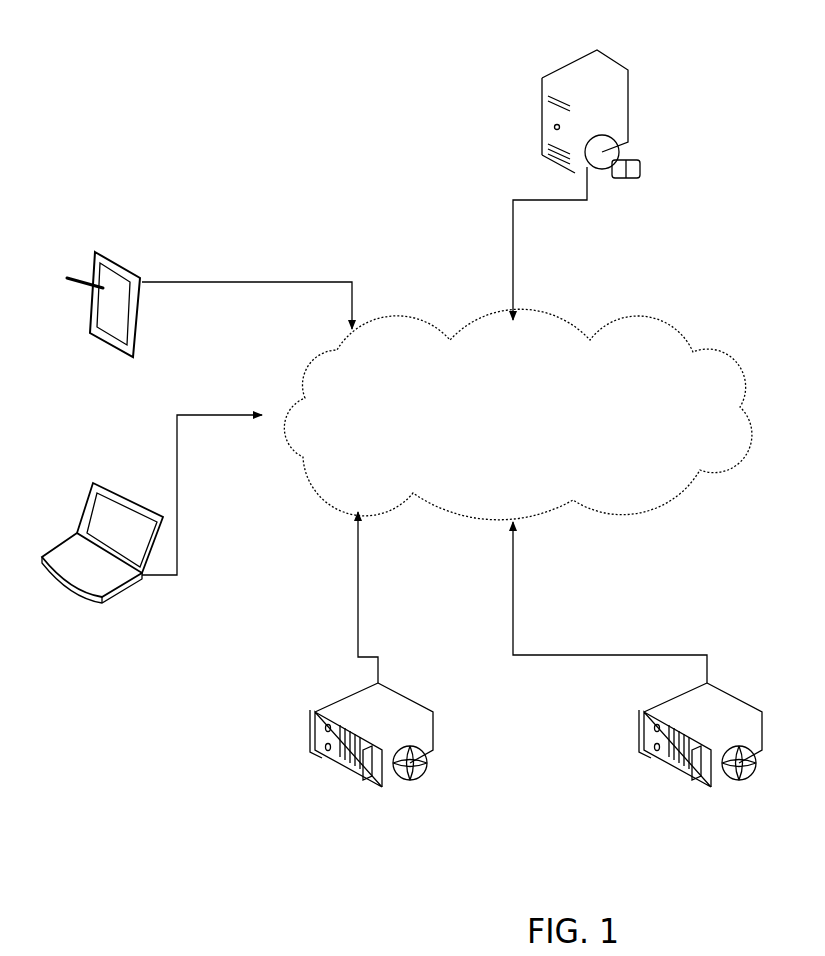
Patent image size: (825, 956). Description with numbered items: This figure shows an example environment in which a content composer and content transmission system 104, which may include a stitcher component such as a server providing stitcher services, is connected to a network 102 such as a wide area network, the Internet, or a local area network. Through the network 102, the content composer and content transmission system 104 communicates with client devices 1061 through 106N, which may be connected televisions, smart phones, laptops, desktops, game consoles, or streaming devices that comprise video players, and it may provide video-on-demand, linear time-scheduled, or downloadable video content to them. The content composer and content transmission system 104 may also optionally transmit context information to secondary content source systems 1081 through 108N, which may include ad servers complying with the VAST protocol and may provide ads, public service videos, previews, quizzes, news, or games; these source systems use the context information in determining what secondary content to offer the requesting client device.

The network 102 is at (518, 414).
The content composer and content transmission system 104 is at (576, 171).
The client device 1061 is at (209, 292).
The client device 106N is at (152, 526).
The secondary content source system 1081 is at (371, 676).
The secondary content source system 108N is at (637, 681).